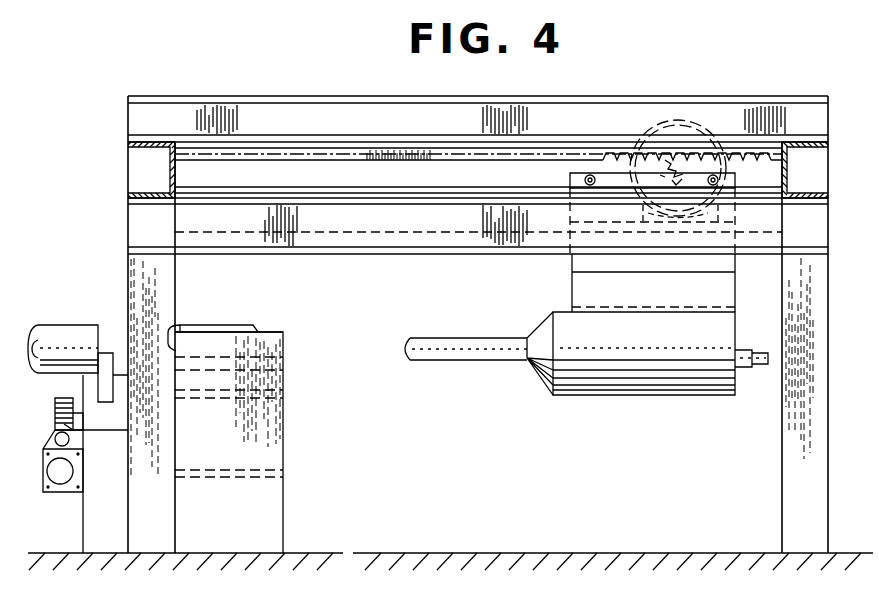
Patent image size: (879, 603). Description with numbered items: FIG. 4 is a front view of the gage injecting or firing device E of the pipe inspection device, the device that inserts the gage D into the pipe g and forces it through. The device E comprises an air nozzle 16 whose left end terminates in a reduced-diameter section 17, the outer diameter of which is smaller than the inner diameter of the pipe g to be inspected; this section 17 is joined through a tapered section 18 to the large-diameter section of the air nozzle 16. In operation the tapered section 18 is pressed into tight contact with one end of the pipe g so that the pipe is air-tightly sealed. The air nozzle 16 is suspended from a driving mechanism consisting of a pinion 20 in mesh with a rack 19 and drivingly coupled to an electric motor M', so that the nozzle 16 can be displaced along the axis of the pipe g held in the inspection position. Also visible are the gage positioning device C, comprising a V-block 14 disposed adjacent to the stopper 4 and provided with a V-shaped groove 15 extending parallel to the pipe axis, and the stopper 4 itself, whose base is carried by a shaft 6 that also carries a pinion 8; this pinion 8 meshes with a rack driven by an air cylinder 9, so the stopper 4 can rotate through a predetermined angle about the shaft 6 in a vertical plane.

The rack 19 is at (387, 148).
The pinion 20 is at (666, 133).
The electric motor M' is at (680, 144).
The pipe g is at (56, 325).
The stopper 4 is at (107, 355).
The shaft 6 is at (64, 399).
The pinion 8 is at (65, 420).
The air cylinder 9 is at (56, 470).
The gage D is at (221, 326).
The V-block 14 is at (258, 370).
The V-shaped groove 15 is at (275, 364).
The gage positioning device C is at (268, 393).
The reduced-diameter section 17 is at (432, 338).
The air nozzle 16 is at (563, 311).
The tapered section 18 is at (540, 323).
The gage injecting or firing device E is at (713, 347).